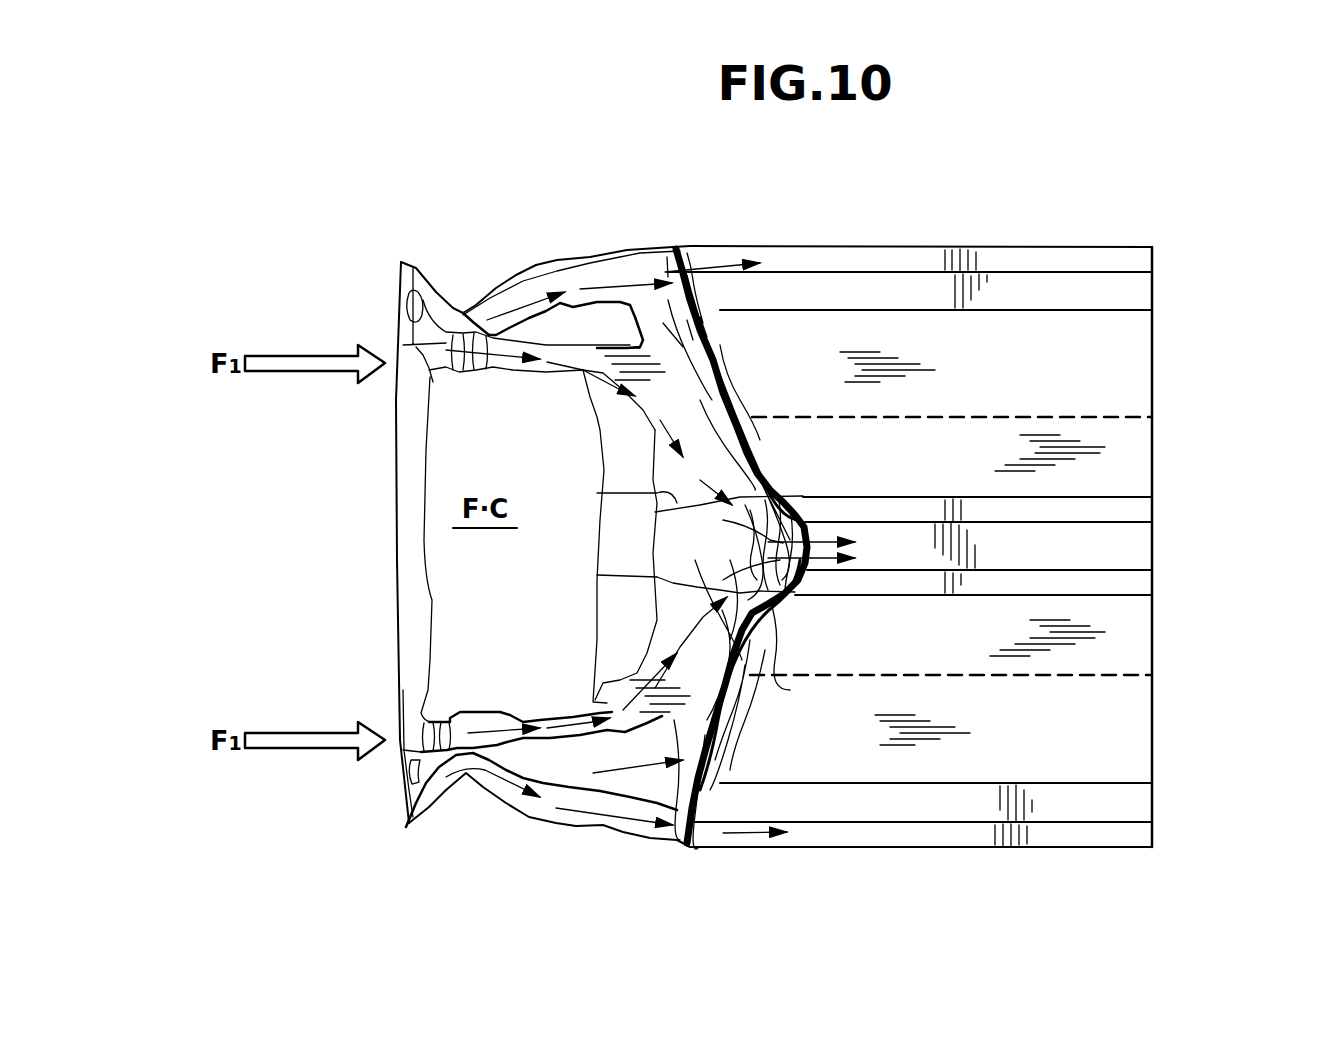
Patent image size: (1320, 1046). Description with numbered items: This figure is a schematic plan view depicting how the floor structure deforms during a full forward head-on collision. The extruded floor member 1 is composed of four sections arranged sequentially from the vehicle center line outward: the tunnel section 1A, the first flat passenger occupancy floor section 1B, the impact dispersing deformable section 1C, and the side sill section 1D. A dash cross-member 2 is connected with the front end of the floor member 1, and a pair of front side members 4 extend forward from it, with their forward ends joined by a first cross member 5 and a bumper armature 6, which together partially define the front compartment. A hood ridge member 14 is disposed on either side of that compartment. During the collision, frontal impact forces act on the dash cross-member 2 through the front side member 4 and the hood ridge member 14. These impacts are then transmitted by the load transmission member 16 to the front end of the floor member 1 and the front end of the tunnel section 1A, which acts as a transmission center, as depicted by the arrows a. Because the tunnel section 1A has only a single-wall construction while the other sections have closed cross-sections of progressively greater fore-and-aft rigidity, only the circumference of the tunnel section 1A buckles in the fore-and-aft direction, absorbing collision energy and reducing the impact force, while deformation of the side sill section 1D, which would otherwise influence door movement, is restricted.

The floor member 1 is at (1155, 333).
The tunnel section 1A is at (1112, 545).
The first flat passenger occupancy floor section 1B is at (1112, 448).
The impact dispersing deformable section 1C is at (1112, 370).
The side sill section 1D is at (1133, 258).
The dash cross-member 2 is at (600, 538).
The front side member 4 is at (517, 375).
The first cross member 5 is at (400, 528).
The bumper armature 6 is at (367, 542).
The hood ridge member 14 is at (590, 257).
The load transmission member 16 is at (657, 493).
The arrows a is at (712, 268).